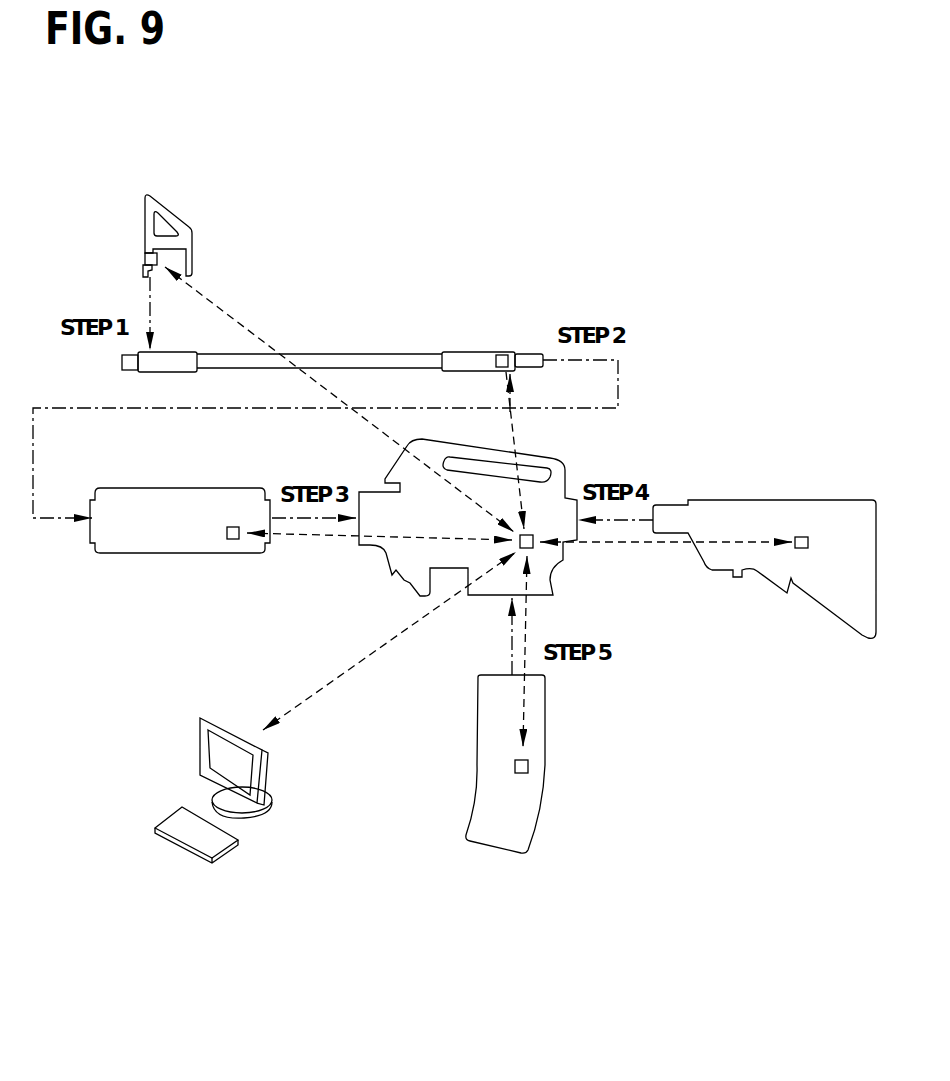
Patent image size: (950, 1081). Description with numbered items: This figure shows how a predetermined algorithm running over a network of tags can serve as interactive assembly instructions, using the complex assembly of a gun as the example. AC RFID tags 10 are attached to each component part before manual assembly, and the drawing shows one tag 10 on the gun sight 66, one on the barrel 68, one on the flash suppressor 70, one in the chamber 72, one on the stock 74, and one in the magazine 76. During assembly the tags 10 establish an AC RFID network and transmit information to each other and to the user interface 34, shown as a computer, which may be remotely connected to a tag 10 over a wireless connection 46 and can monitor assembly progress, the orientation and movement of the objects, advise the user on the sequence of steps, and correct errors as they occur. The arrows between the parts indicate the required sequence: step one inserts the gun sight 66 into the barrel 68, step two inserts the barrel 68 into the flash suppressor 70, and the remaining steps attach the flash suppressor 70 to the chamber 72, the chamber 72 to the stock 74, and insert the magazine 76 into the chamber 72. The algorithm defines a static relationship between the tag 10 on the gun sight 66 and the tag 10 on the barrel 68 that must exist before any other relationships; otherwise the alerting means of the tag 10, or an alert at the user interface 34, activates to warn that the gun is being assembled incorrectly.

The AC RFID tag 10 is at (145, 258).
The user interface 34 is at (220, 755).
The wireless connection 46 is at (247, 328).
The gun sight 66 is at (190, 242).
The barrel 68 is at (395, 352).
The flash suppressor 70 is at (147, 538).
The chamber 72 is at (553, 595).
The stock 74 is at (745, 498).
The magazine 76 is at (535, 827).